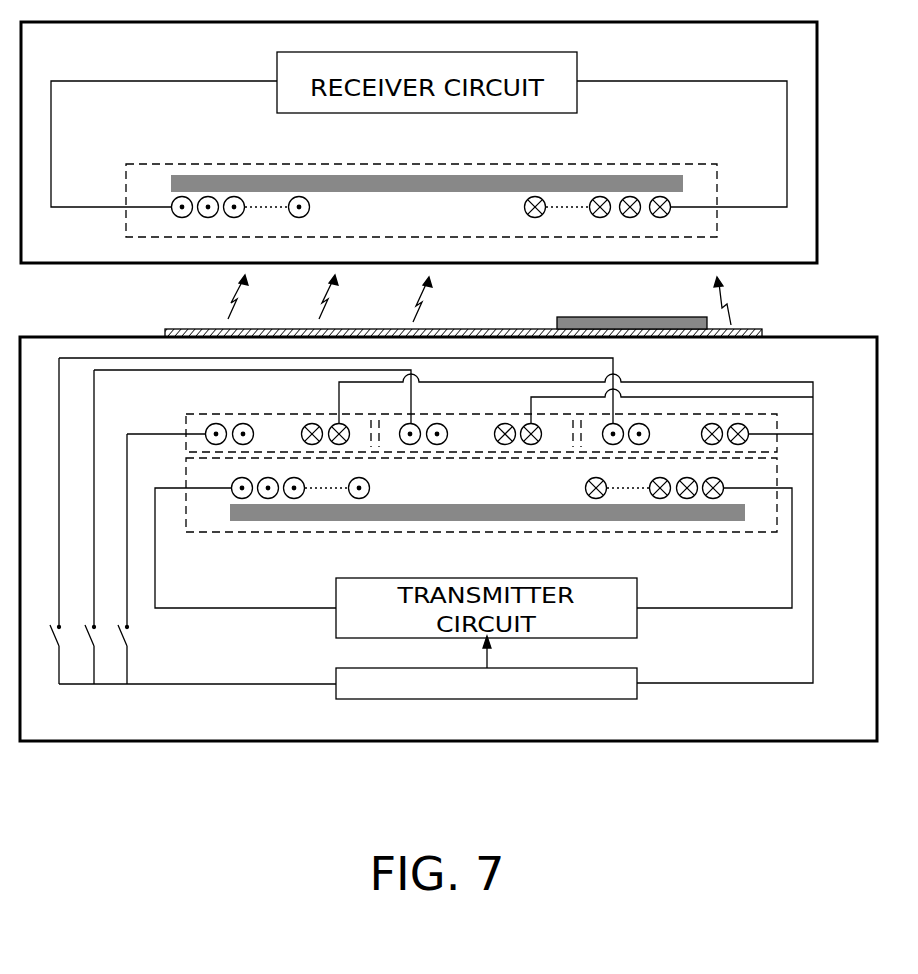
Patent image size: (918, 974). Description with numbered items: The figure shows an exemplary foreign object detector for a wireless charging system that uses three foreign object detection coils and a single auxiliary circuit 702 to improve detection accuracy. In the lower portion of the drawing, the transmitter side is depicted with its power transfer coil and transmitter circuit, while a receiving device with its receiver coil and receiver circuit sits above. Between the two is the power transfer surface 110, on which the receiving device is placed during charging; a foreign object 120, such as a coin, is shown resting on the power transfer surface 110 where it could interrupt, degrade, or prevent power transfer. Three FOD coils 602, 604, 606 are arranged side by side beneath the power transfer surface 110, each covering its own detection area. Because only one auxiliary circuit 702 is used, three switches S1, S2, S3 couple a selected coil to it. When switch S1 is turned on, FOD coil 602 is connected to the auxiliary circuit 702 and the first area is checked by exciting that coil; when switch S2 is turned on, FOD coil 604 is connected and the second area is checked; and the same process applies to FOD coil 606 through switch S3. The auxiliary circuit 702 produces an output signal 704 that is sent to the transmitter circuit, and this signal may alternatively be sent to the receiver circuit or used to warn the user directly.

The power transfer surface 110 is at (181, 330).
The object 120 is at (610, 322).
The FOD coil 602 is at (211, 426).
The FOD coil 604 is at (440, 423).
The FOD coil 606 is at (712, 423).
The auxiliary circuit 702 is at (362, 700).
The output signal 704 is at (484, 649).
The switch S1 is at (135, 559).
The switch S2 is at (81, 527).
The switch S3 is at (45, 521).